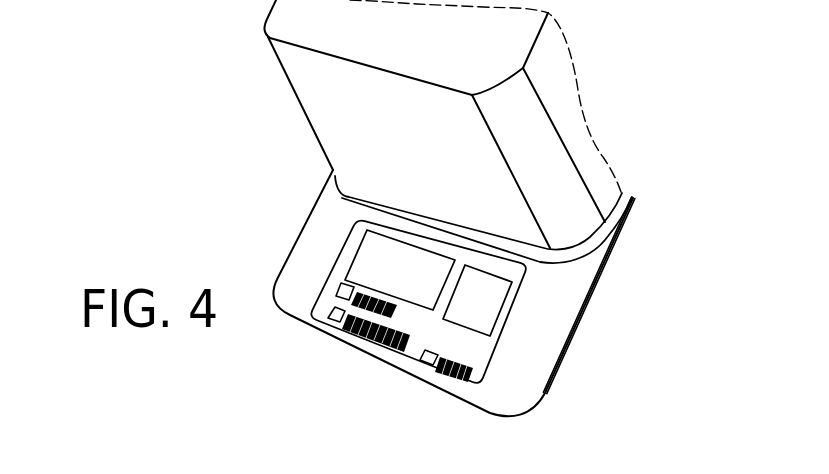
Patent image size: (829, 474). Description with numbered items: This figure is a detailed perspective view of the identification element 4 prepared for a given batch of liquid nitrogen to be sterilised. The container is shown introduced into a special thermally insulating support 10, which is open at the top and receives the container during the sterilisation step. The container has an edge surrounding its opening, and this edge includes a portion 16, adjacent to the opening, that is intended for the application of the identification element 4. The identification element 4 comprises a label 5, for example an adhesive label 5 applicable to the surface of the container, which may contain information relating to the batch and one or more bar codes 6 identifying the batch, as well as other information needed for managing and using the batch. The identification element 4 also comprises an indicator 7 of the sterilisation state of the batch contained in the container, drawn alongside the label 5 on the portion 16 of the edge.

The thermally insulating support 10 is at (312, 111).
The portion 16 is at (533, 382).
The identification element 4 is at (359, 351).
The label 5 is at (347, 276).
The indicator 7 is at (502, 290).
The bar codes 6 is at (358, 330).